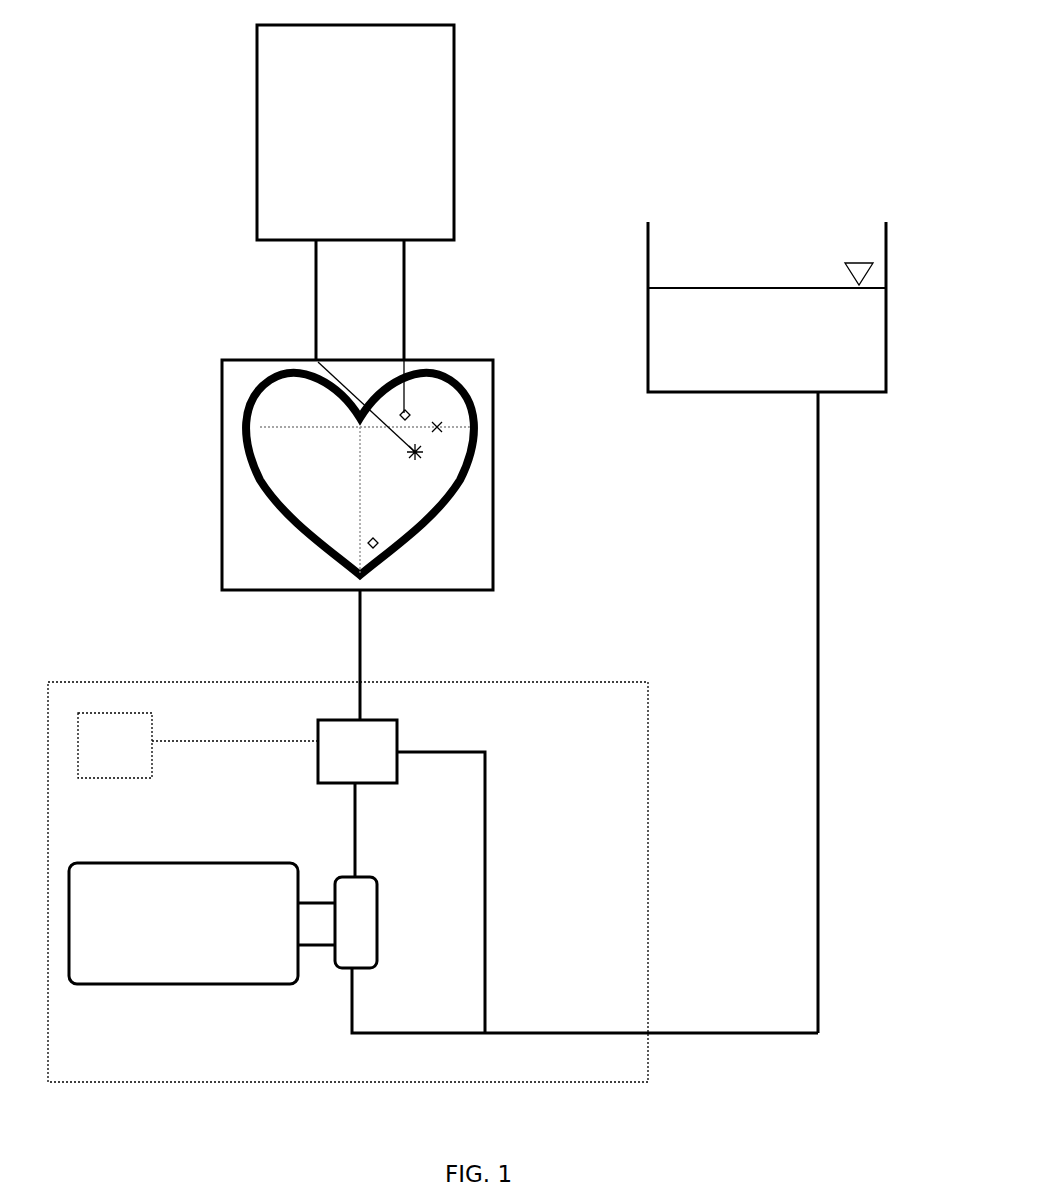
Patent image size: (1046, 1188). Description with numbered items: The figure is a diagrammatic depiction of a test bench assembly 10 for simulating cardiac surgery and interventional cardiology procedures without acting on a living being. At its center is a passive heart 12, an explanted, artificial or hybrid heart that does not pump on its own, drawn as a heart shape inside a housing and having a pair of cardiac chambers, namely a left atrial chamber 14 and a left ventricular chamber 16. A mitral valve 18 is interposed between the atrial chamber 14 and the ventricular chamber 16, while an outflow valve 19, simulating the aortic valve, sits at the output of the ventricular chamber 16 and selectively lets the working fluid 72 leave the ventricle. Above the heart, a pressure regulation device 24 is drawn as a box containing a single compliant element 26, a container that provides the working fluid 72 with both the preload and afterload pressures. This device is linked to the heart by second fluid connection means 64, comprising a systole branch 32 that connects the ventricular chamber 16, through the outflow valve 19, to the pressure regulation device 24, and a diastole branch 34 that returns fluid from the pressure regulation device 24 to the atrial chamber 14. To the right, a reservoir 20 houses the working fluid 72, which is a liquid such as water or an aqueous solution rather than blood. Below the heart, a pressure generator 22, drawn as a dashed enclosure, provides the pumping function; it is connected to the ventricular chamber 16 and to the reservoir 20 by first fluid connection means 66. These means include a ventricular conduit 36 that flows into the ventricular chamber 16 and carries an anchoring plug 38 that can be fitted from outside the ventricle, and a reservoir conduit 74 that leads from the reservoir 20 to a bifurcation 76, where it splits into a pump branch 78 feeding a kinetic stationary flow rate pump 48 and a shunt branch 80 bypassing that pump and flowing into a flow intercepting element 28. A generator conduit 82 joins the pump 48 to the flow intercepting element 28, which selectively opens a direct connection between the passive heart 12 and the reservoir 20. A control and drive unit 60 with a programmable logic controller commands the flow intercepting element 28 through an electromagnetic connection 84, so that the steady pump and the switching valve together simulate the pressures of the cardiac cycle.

The test bench assembly 10 is at (630, 143).
The passive heart 12 is at (494, 466).
The atrial chamber 14 is at (442, 398).
The ventricular chamber 16 is at (410, 490).
The mitral valve 18 is at (440, 427).
The outflow valve 19 is at (418, 455).
The reservoir 20 is at (888, 322).
The pressure generator 22 is at (532, 681).
The pressure regulation device 24 is at (456, 72).
The compliant element 26 is at (385, 148).
The flow intercepting element 28 is at (399, 734).
The systole branch 32 is at (316, 292).
The diastole branch 34 is at (405, 286).
The ventricular conduit 36 is at (360, 638).
The anchoring plug 38 is at (376, 549).
The kinetic stationary flow rate pump 48 is at (201, 986).
The control and drive unit 60 is at (154, 722).
The second fluid connection means 64 is at (466, 335).
The first fluid connection means 66 is at (378, 664).
The working fluid 72 is at (725, 302).
The reservoir conduit 74 is at (820, 690).
The bifurcation 76 is at (488, 1028).
The pump branch 78 is at (403, 1036).
The shunt branch 80 is at (487, 854).
The generator conduit 82 is at (358, 852).
The electromagnetic connection 84 is at (205, 743).